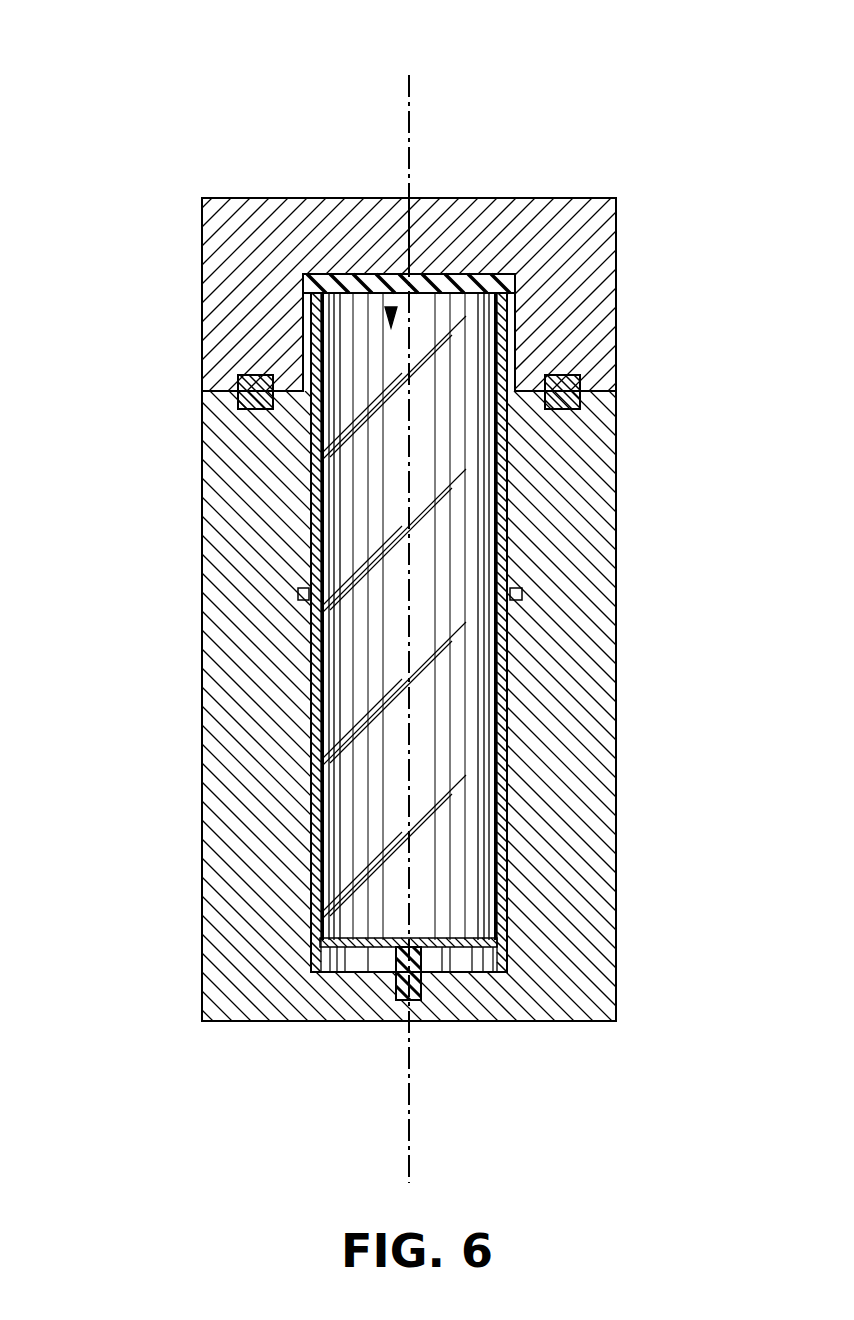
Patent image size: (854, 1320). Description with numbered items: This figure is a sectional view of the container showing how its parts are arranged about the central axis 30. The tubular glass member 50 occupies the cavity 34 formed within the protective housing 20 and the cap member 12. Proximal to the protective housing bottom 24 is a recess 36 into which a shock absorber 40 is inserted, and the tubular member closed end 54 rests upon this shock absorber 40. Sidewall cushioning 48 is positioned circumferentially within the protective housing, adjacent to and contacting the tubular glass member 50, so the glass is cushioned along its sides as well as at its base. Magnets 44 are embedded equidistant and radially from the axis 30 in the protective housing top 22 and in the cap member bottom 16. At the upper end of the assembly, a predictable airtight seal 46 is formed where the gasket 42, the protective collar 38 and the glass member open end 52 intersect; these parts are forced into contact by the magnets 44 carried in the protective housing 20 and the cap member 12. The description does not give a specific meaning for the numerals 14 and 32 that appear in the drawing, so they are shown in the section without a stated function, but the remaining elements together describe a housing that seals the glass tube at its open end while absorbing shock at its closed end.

The cap member 12 is at (223, 277).
The second mold block 14 is at (550, 198).
The cap member bottom 16 is at (522, 393).
The protective housing 20 is at (232, 782).
The protective housing top 22 is at (292, 386).
The protective housing bottom 24 is at (288, 1022).
The axis 30 is at (388, 92).
The sleeve bottom corner 32 is at (290, 967).
The cavity 34 is at (348, 973).
The recess 36 is at (442, 992).
The protective collar 38 is at (312, 350).
The shock absorber 40 is at (397, 967).
The gasket 42 is at (438, 293).
The magnets 44 is at (255, 385).
The airtight seal 46 is at (318, 290).
The sidewall cushioning 48 is at (298, 592).
The tubular glass member 50 is at (505, 758).
The glass member open end 52 is at (391, 307).
The tubular member closed end 54 is at (466, 952).